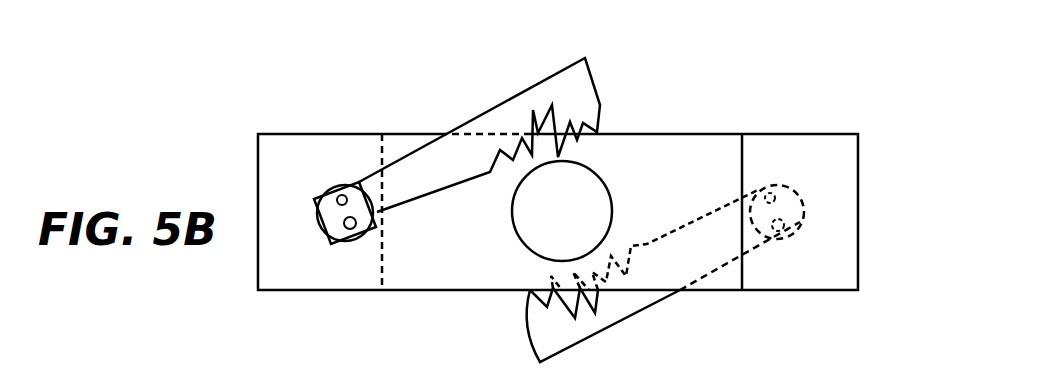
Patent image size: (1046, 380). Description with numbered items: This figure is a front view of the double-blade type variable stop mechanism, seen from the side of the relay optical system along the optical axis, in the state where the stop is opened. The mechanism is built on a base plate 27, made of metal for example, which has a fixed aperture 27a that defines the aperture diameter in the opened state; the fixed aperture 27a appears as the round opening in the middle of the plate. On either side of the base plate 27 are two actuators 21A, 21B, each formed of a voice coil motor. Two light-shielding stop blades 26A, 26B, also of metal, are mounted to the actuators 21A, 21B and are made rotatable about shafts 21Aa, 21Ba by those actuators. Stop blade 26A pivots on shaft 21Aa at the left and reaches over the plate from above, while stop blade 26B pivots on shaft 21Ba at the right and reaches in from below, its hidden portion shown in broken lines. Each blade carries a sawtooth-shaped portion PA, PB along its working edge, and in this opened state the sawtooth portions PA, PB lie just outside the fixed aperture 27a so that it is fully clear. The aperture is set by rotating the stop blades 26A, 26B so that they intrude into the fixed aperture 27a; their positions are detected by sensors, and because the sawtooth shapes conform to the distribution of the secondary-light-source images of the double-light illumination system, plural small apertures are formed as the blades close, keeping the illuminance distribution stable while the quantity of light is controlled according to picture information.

The actuator 21A is at (325, 268).
The shaft 21Aa is at (362, 200).
The stop blade 26A is at (565, 82).
The base plate 27 is at (717, 153).
The fixed aperture 27a is at (582, 204).
The actuator 21B is at (792, 275).
The shaft 21Ba is at (797, 203).
The stop blade 26B is at (610, 313).
The sawtooth portion PA is at (582, 150).
The sawtooth portion PB is at (562, 310).